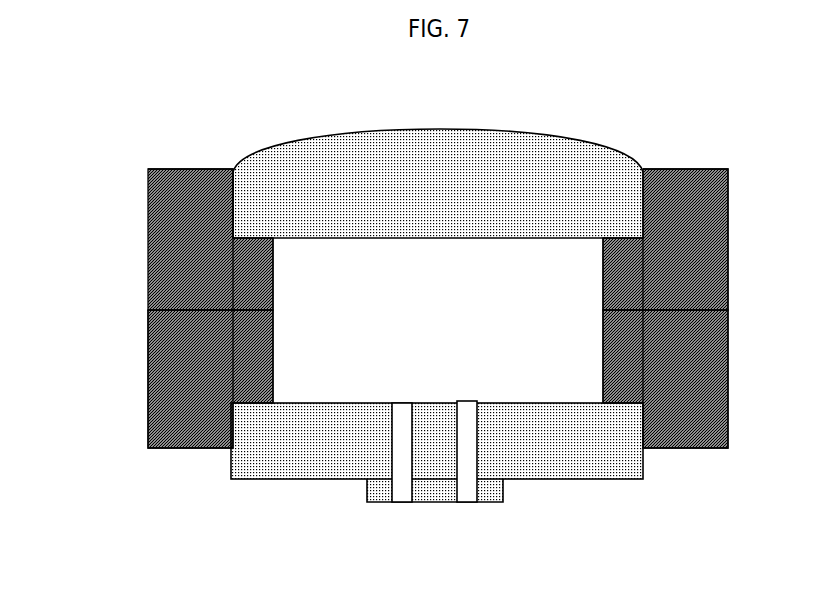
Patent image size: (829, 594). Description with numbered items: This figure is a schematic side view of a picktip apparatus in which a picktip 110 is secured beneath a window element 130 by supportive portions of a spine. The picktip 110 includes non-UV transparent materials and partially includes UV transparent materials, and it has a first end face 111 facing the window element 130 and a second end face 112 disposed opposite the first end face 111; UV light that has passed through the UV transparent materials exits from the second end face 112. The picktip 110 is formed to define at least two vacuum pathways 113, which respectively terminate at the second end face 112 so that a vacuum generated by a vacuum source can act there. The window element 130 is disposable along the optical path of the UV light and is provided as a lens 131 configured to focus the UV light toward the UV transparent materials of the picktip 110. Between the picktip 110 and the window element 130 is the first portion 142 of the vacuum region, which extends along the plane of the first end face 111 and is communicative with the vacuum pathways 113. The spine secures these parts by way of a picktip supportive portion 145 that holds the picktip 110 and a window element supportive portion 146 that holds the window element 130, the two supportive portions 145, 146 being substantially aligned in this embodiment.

The picktip 110 is at (379, 460).
The first end face 111 is at (348, 402).
The second end face 112 is at (303, 480).
The vacuum pathways 113 is at (408, 488).
The window element 130 is at (415, 173).
The lens 131 is at (331, 176).
The first portion 142 is at (401, 323).
The picktip supportive portion 145 is at (187, 417).
The window element supportive portion 146 is at (187, 193).